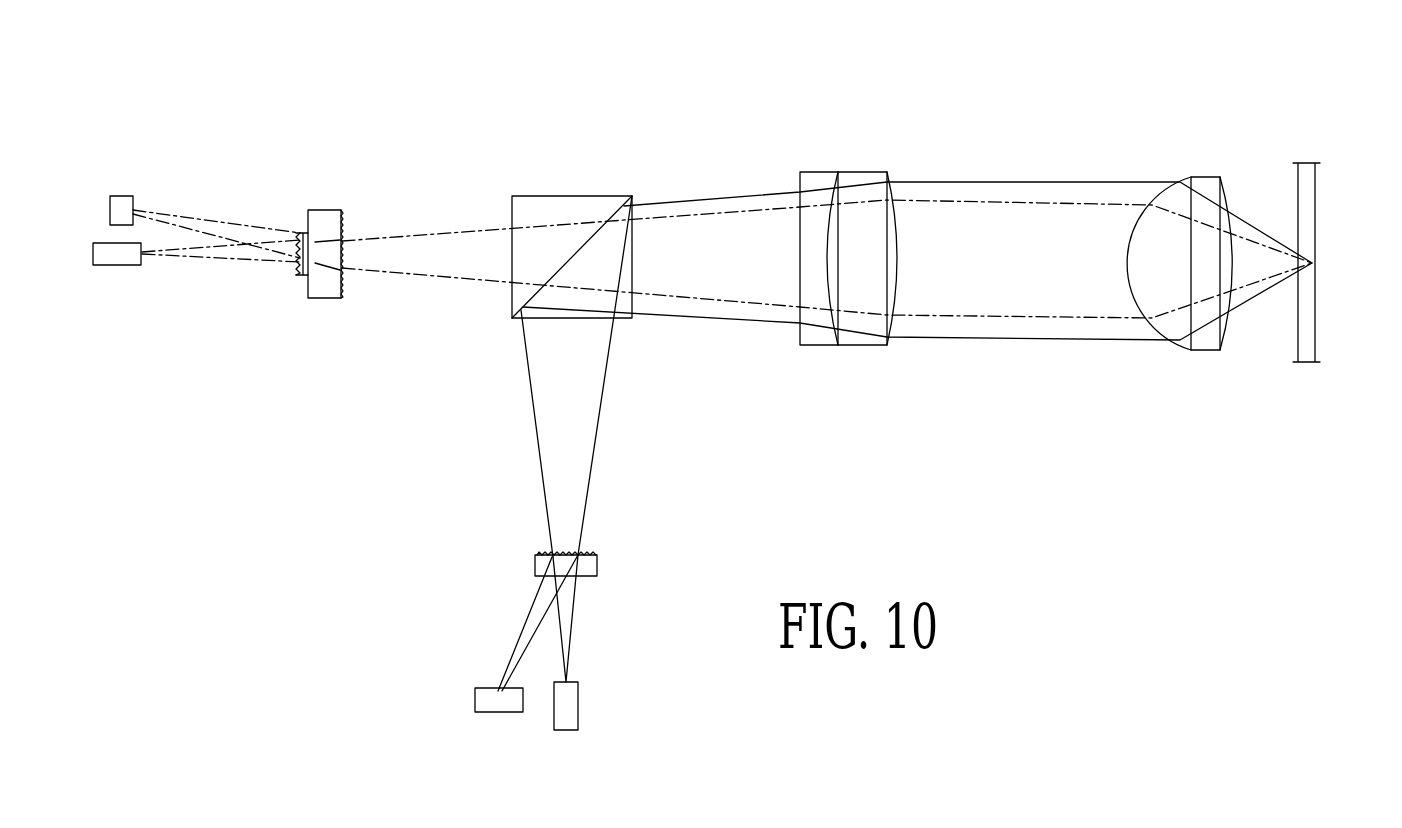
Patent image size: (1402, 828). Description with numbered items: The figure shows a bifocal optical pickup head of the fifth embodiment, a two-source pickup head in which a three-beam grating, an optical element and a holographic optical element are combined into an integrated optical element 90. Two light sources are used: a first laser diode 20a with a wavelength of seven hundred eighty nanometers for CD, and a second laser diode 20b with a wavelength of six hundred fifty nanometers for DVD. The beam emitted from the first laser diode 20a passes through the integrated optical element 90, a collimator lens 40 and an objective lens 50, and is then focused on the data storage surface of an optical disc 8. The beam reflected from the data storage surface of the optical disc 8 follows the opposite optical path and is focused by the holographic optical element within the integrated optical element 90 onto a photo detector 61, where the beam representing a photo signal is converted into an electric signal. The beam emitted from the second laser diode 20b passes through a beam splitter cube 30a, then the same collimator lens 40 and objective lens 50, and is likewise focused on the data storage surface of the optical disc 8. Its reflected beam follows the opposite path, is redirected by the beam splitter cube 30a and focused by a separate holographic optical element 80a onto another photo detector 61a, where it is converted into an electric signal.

The optical disc 8 is at (1322, 202).
The first laser diode 20a is at (128, 266).
The second laser diode 20b is at (590, 695).
The beam splitter cube 30a is at (575, 245).
The collimator lens 40 is at (820, 165).
The objective lens 50 is at (1205, 168).
The photo detector 61 is at (123, 196).
The photo detector 61a is at (498, 692).
The holographic optical element 80a is at (603, 545).
The integrated optical element 90 is at (323, 210).